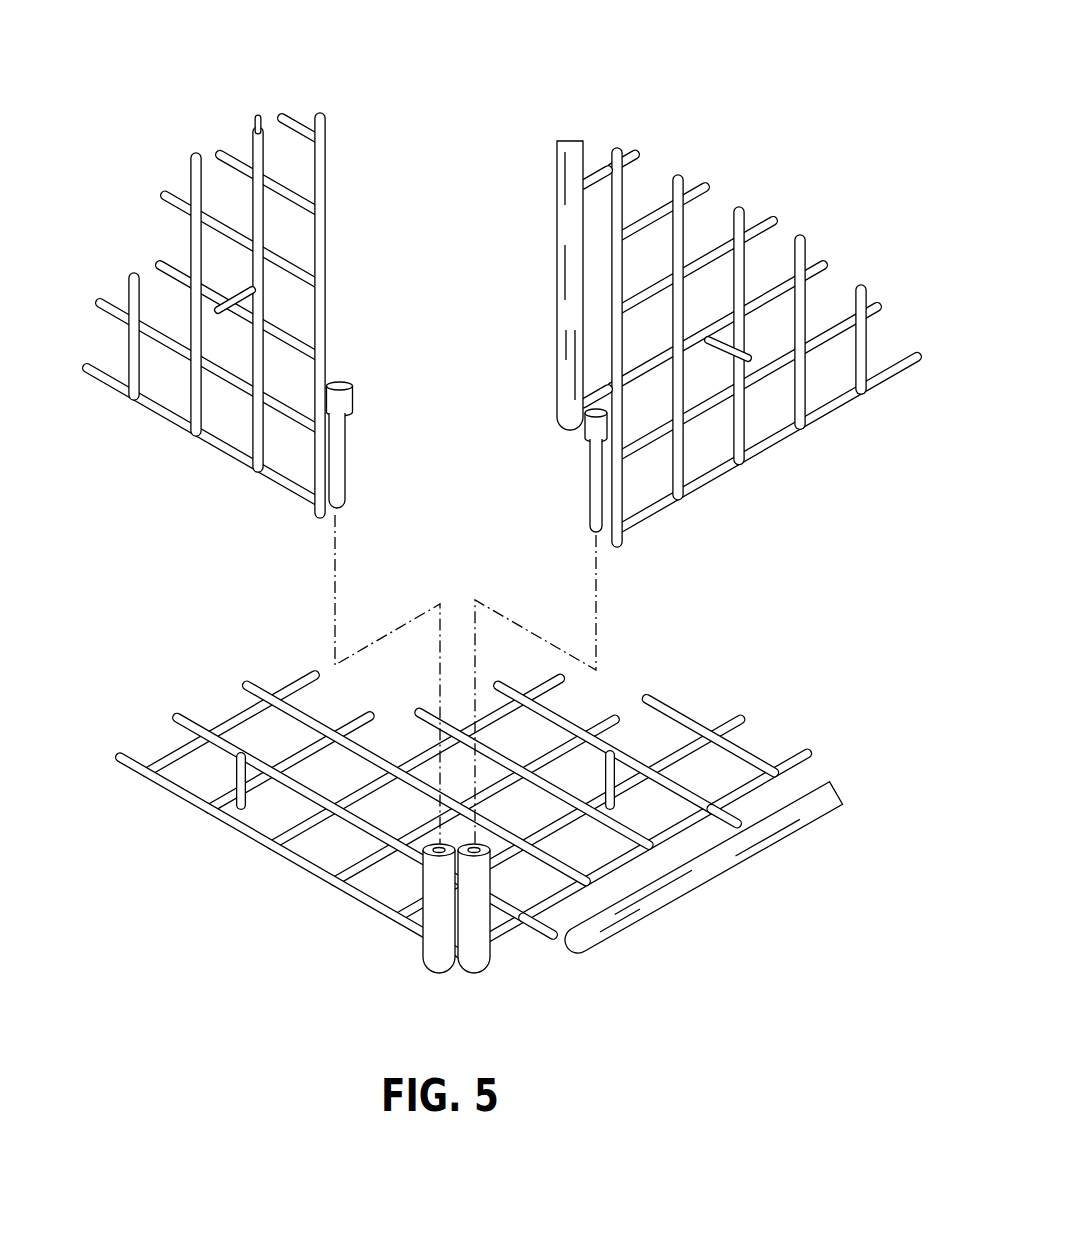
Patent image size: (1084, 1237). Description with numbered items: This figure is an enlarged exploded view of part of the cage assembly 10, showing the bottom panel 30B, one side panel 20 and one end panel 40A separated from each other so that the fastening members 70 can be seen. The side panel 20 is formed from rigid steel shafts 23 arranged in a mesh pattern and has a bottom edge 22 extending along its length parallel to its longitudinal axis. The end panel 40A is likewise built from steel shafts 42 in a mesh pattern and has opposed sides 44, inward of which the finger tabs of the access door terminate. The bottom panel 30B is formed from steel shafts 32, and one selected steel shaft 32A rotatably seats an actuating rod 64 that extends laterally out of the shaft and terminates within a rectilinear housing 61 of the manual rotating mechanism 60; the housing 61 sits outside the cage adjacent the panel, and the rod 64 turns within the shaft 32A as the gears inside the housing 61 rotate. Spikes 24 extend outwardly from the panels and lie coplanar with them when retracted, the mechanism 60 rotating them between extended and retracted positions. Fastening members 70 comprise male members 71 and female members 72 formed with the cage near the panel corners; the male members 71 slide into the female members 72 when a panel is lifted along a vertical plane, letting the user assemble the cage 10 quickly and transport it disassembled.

The assembly 10 is at (724, 57).
The side panel 20 is at (764, 341).
The bottom edge 22 is at (745, 458).
The steel shaft 23 is at (722, 250).
The spike 24 is at (235, 308).
The bottom panel 30B is at (463, 788).
The steel shaft 32 is at (488, 822).
The selected steel shaft 32A is at (367, 828).
The end panel 40A is at (256, 315).
The steel shaft 42 is at (150, 318).
The side of end panel 44 is at (327, 255).
The manual rotating mechanism 60 is at (580, 138).
The rectilinear housing 61 is at (558, 300).
The actuating rod 64 is at (256, 115).
The fastening member 70 is at (355, 397).
The male member 71 is at (348, 468).
The female member 72 is at (433, 962).